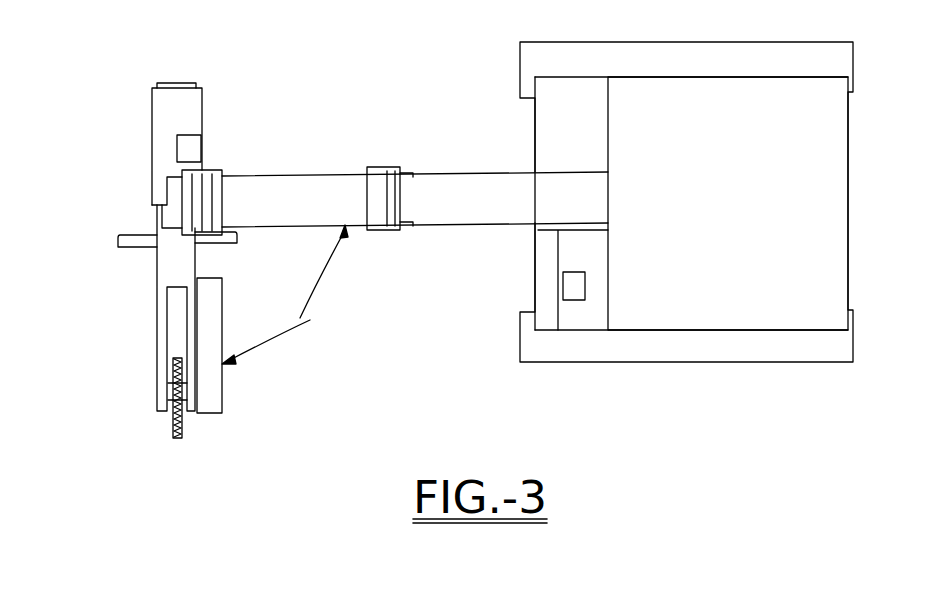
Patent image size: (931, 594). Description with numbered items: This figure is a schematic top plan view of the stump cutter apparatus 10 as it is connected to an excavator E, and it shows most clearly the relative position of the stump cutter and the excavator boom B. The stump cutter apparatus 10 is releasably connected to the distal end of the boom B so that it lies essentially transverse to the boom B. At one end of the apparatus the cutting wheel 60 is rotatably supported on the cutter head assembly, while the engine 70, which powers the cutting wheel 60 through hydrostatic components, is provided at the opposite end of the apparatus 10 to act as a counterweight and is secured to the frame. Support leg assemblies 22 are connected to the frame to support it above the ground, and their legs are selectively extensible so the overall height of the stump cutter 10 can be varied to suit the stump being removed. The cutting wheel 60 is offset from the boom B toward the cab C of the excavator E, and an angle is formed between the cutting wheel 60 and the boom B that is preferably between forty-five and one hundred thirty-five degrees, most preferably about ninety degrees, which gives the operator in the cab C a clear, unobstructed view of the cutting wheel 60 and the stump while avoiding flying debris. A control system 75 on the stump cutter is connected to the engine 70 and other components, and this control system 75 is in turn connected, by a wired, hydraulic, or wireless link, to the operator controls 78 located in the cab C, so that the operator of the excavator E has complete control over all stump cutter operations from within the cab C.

The stump cutter apparatus 10 is at (133, 296).
The engine 70 is at (152, 102).
The control system 75 is at (198, 150).
The support leg assemblies 22 is at (118, 243).
The cutting wheel 60 is at (182, 430).
The operator controls 78 is at (573, 285).
The excavator boom B is at (298, 175).
The excavator E is at (719, 223).
The cab C is at (654, 284).